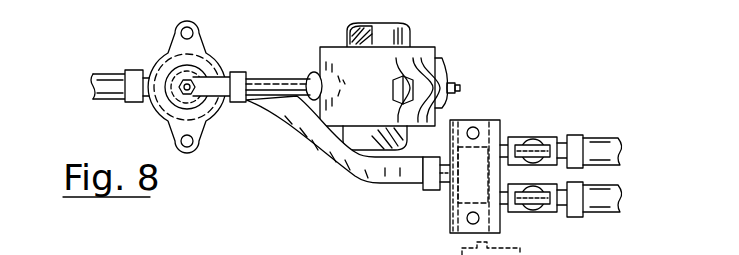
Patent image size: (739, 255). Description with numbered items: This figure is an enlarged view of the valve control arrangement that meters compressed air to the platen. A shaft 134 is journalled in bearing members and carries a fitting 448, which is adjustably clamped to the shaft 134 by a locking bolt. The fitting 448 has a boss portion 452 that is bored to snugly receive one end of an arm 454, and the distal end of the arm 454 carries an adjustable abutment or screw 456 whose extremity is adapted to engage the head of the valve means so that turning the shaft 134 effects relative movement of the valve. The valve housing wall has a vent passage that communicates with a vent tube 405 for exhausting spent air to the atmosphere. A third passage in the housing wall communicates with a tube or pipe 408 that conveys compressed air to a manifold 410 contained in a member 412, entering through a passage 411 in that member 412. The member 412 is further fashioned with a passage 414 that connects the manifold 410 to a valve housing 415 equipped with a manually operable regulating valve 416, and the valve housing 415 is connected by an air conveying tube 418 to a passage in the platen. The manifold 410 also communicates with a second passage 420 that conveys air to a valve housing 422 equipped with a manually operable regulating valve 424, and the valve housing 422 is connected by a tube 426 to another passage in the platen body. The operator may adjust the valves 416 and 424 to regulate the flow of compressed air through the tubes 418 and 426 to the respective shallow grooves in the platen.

The vent tube 405 is at (106, 73).
The adjustable abutment screw 456 is at (183, 83).
The boss portion 452 is at (318, 72).
The arm 454 is at (311, 75).
The shaft 134 is at (406, 30).
The fitting 448 is at (411, 48).
The tube 408 is at (308, 128).
The member 412 is at (448, 195).
The manifold 410 is at (475, 185).
The passage 411 is at (460, 108).
The passage 414 is at (505, 112).
The valve housing 415 is at (550, 137).
The regulating valve 416 is at (565, 134).
The air conveying tube 418 is at (618, 150).
The second passage 420 is at (500, 228).
The valve housing 422 is at (555, 215).
The regulating valve 424 is at (552, 208).
The tube 426 is at (623, 198).